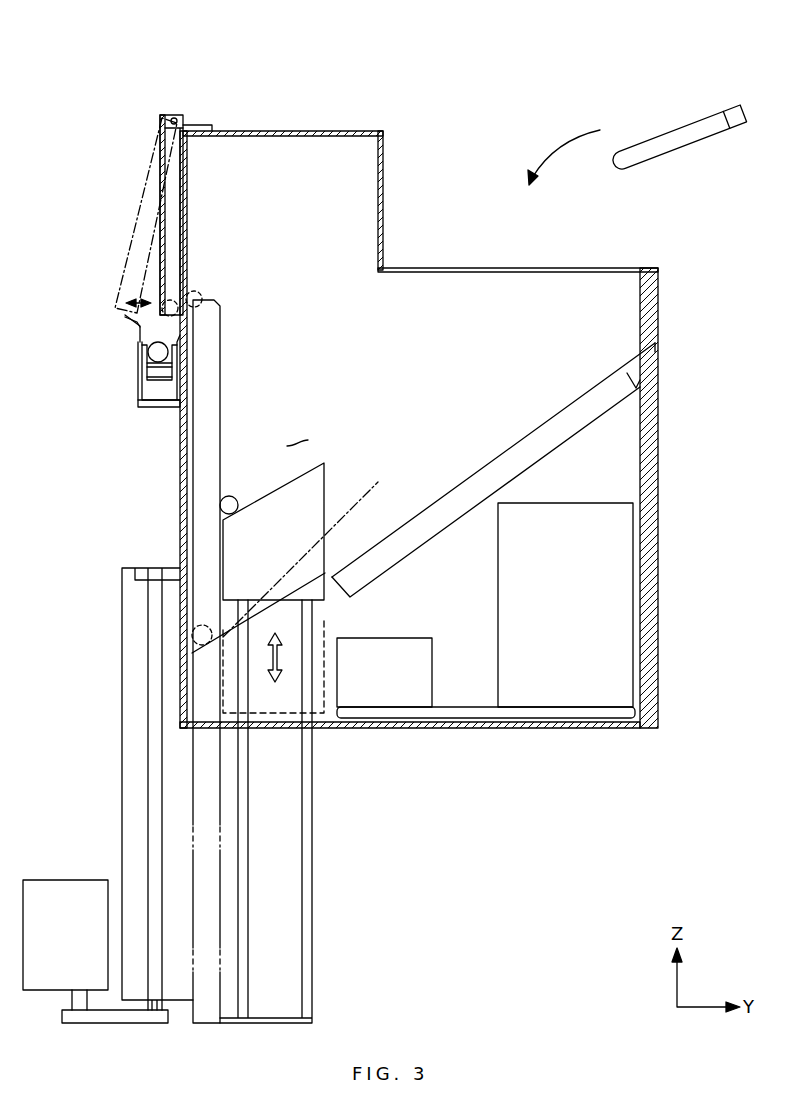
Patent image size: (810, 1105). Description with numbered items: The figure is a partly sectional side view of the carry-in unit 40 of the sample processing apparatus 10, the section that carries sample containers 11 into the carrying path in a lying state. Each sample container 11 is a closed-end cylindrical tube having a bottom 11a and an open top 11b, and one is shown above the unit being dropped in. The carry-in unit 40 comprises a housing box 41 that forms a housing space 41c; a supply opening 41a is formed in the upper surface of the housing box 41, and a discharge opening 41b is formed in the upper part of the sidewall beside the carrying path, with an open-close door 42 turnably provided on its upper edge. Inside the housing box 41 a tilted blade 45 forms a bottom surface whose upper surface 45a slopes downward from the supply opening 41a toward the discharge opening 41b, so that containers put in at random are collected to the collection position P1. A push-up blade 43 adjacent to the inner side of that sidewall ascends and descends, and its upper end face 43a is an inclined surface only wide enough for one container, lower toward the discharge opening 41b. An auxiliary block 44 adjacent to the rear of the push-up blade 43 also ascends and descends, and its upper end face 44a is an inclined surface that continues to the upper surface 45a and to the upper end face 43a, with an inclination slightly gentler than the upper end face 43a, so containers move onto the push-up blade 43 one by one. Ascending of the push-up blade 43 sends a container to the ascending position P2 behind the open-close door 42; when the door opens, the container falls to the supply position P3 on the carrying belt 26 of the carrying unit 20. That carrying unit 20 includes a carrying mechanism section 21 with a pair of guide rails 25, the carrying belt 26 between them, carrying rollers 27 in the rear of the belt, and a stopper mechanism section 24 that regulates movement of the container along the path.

The sample processing apparatus 10 is at (508, 78).
The sample container 11 is at (680, 127).
The bottom 11a is at (620, 170).
The top 11b is at (737, 107).
The carrying unit 20 is at (137, 386).
The carrying mechanism section 21 is at (137, 402).
The stopper mechanism section 24 is at (326, 621).
The guide rails 25 is at (140, 365).
The carrying belt 26 is at (168, 352).
The carrying rollers 27 is at (172, 372).
The carry-in unit 40 is at (567, 729).
The housing box 41 is at (660, 450).
The supply opening 41a is at (455, 268).
The discharge opening 41b is at (183, 198).
The housing space 41c is at (371, 423).
The open-close door 42 is at (158, 228).
The push-up blade 43 is at (212, 405).
The upper end face 43a is at (205, 299).
The auxiliary block 44 is at (250, 498).
The upper end face 44a is at (290, 472).
The tilted blade 45 is at (462, 480).
The upper surface 45a is at (522, 437).
The collection position P1 is at (205, 633).
The ascending position P2 is at (182, 291).
The supply position P3 is at (148, 352).